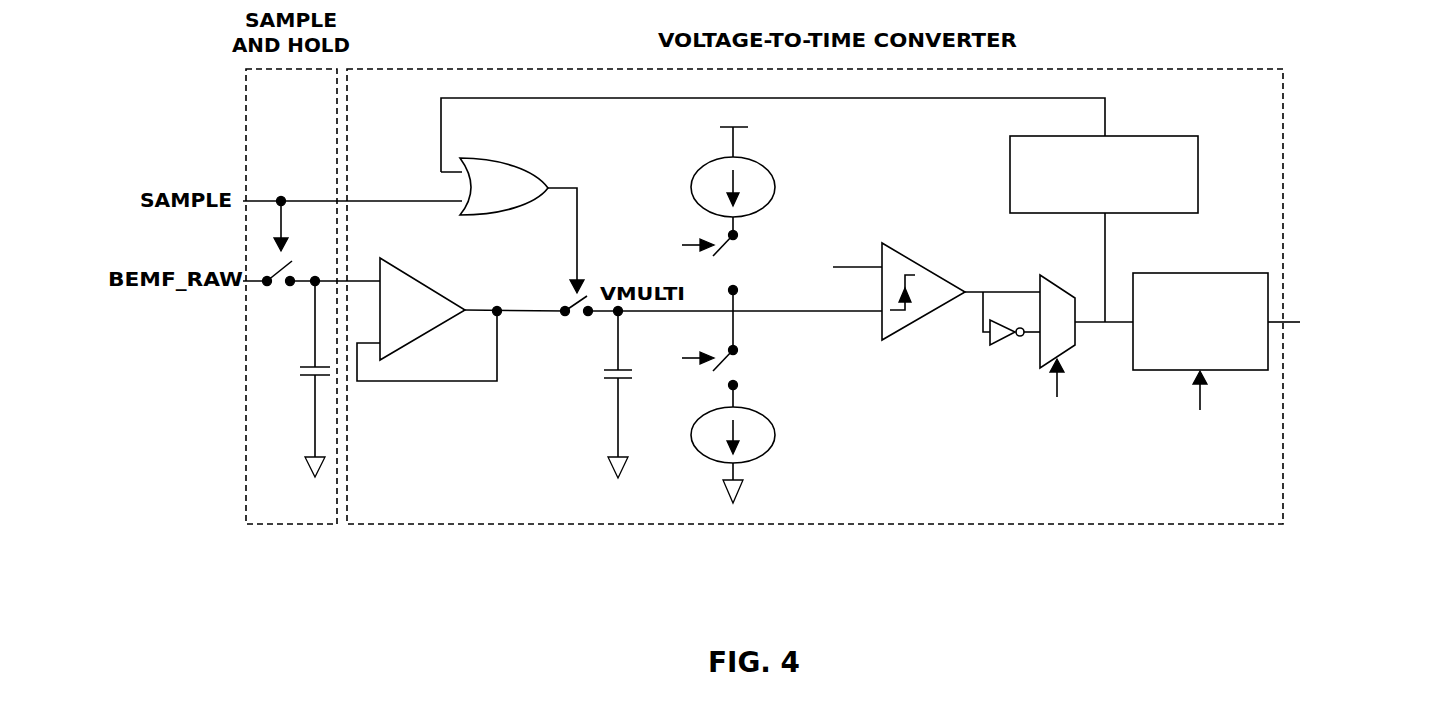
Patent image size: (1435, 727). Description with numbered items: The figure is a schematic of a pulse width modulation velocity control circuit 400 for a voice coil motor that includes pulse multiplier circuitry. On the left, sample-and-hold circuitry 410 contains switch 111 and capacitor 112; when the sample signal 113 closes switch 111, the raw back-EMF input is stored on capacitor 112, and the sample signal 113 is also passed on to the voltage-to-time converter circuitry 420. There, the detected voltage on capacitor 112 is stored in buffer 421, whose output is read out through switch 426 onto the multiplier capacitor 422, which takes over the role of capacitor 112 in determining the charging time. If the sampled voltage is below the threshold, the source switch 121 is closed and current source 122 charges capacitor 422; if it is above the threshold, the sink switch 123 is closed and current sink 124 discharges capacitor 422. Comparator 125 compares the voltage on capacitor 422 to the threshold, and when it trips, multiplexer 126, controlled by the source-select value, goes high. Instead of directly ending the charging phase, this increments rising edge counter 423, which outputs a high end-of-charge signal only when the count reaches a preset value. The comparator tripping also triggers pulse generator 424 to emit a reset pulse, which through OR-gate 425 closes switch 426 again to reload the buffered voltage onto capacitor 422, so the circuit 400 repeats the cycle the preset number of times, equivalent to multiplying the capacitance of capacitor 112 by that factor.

The switch 111 is at (288, 292).
The capacitor 112 is at (312, 380).
The sample signal 113 is at (258, 200).
The SRC switch 121 is at (733, 266).
The current source 122 is at (758, 160).
The SNK switch 123 is at (733, 368).
The current sink 124 is at (752, 410).
The comparator 125 is at (918, 318).
The multiplexer 126 is at (1062, 288).
The pulse width modulation velocity control circuit 400 is at (1283, 526).
The sample-and-hold circuitry 410 is at (246, 436).
The voltage-to-time converter circuitry 420 is at (465, 68).
The buffer 421 is at (425, 283).
The C_MULTIPLIER capacitor 422 is at (612, 382).
The rising edge counter 423 is at (1185, 273).
The pulse generator 424 is at (1030, 136).
The OR-gate 425 is at (505, 160).
The switch 426 is at (583, 318).